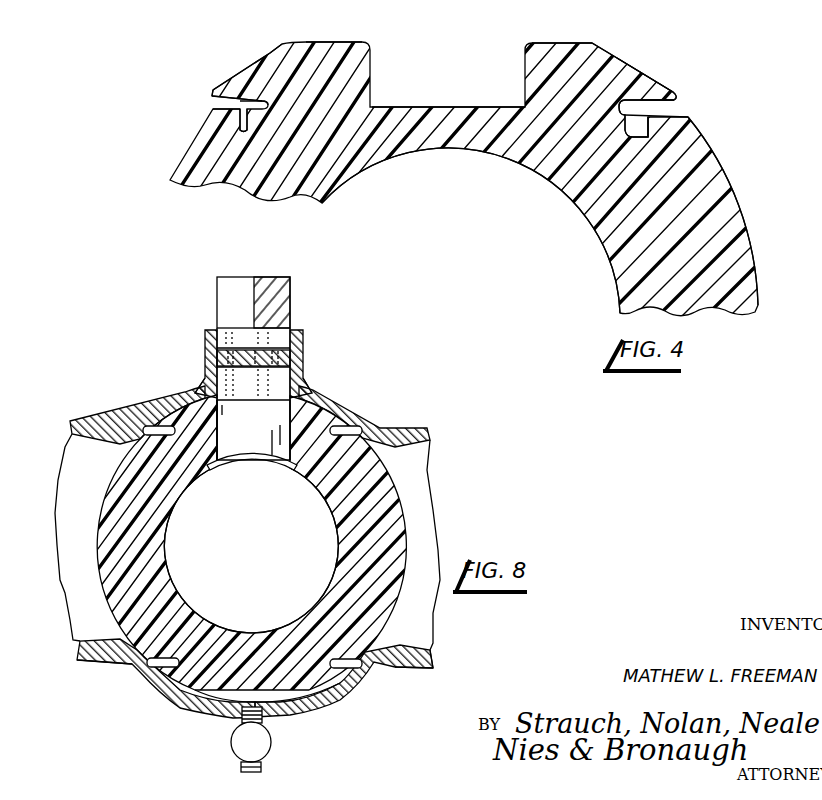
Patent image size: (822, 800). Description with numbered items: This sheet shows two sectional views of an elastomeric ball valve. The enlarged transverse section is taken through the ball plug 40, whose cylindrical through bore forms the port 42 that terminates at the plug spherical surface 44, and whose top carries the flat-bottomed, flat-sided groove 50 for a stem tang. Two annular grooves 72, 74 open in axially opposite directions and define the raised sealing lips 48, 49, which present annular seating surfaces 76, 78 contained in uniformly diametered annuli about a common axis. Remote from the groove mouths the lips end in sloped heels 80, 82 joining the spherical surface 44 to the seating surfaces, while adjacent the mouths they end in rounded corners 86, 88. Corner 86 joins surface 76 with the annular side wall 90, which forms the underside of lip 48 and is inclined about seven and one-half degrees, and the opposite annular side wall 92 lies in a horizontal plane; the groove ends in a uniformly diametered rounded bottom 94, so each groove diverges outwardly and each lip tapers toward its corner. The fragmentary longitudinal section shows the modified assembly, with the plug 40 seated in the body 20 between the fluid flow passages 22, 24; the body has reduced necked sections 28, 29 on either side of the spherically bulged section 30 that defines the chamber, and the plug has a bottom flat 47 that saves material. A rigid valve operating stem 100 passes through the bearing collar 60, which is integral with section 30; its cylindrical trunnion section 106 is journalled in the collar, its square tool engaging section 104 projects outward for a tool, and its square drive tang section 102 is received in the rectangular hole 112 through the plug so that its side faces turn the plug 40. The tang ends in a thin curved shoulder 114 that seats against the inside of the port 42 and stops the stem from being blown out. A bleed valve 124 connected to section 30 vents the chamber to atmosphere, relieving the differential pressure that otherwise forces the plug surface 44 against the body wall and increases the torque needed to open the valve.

In FIG. 8, the body 20 is at (411, 426).
In FIG. 8, the fluid flow passage 22 is at (433, 656).
In FIG. 8, the fluid flow passage 24 is at (75, 643).
In FIG. 8, the necked section 28 is at (395, 667).
In FIG. 8, the necked section 29 is at (112, 661).
In FIG. 8, the spherically bulged section 30 is at (312, 393).
In FIG. 4, the ball plug 40 is at (730, 150).
In FIG. 8, the ball plug 40 is at (416, 543).
In FIG. 4, the port 42 is at (557, 189).
In FIG. 8, the port 42 is at (181, 599).
In FIG. 4, the spherical surface 44 is at (737, 206).
In FIG. 8, the bottom flat 47 is at (280, 699).
In FIG. 4, the sealing lip 48 is at (661, 70).
In FIG. 8, the sealing lip 48 is at (342, 418).
In FIG. 4, the sealing lip 49 is at (238, 62).
In FIG. 8, the sealing lip 49 is at (159, 404).
In FIG. 4, the groove 50 is at (482, 106).
In FIG. 8, the bearing collar 60 is at (304, 346).
In FIG. 4, the annular groove 72 is at (660, 109).
In FIG. 8, the annular groove 72 is at (351, 430).
In FIG. 4, the annular groove 74 is at (222, 107).
In FIG. 8, the annular groove 74 is at (150, 430).
In FIG. 4, the annular seating surface 76 is at (661, 56).
In FIG. 4, the annular seating surface 78 is at (264, 54).
In FIG. 4, the sloped heel 80 is at (622, 44).
In FIG. 4, the sloped heel 82 is at (282, 49).
In FIG. 4, the rounded corner 86 is at (676, 92).
In FIG. 4, the rounded corner 88 is at (212, 90).
In FIG. 4, the annular side wall 90 is at (667, 100).
In FIG. 4, the annular side wall 92 is at (678, 115).
In FIG. 4, the rounded bottom 94 is at (647, 133).
In FIG. 8, the valve operating stem 100 is at (297, 322).
In FIG. 8, the drive tang section 102 is at (271, 426).
In FIG. 8, the tool engaging section 104 is at (291, 284).
In FIG. 8, the trunnion section 106 is at (291, 362).
In FIG. 8, the rectangular hole 112 is at (218, 431).
In FIG. 8, the shoulder 114 is at (236, 470).
In FIG. 8, the bleed valve 124 is at (230, 743).